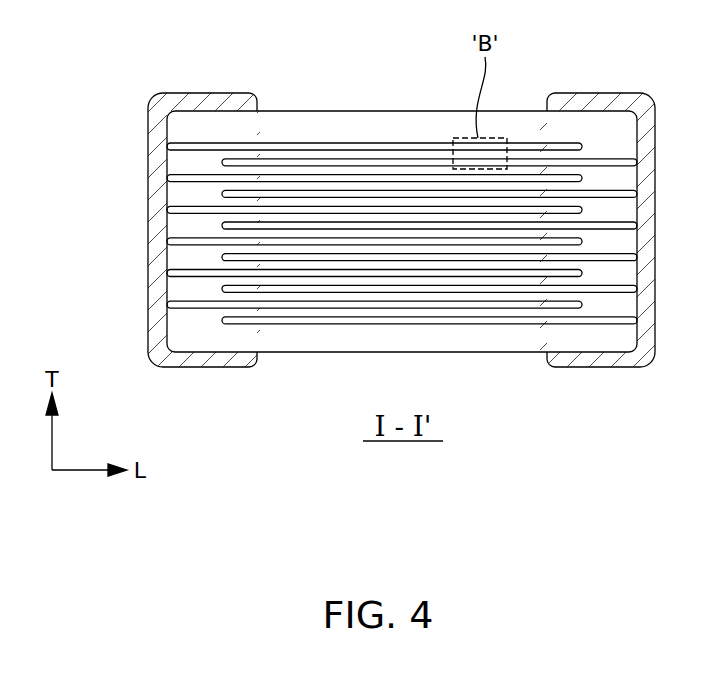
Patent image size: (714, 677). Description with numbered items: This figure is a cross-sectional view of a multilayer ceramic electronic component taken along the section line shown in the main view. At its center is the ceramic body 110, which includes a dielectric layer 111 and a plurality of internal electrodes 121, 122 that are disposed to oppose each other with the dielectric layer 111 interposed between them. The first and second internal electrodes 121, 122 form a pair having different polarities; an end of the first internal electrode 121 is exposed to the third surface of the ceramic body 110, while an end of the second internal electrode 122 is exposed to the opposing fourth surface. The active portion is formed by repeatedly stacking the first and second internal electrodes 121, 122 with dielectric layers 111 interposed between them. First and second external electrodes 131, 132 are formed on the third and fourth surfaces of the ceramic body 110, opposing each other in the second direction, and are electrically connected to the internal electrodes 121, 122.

The ceramic body 110 is at (335, 187).
The dielectric layer 111 is at (175, 158).
The first internal electrode 121 is at (203, 143).
The second internal electrode 122 is at (237, 162).
The first external electrode 131 is at (203, 93).
The second external electrode 132 is at (601, 93).